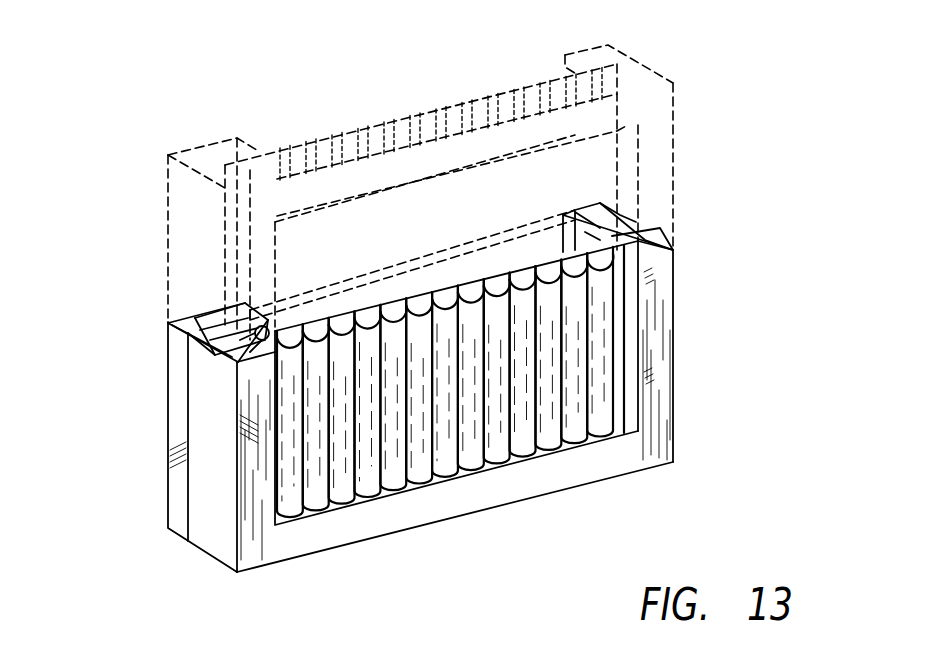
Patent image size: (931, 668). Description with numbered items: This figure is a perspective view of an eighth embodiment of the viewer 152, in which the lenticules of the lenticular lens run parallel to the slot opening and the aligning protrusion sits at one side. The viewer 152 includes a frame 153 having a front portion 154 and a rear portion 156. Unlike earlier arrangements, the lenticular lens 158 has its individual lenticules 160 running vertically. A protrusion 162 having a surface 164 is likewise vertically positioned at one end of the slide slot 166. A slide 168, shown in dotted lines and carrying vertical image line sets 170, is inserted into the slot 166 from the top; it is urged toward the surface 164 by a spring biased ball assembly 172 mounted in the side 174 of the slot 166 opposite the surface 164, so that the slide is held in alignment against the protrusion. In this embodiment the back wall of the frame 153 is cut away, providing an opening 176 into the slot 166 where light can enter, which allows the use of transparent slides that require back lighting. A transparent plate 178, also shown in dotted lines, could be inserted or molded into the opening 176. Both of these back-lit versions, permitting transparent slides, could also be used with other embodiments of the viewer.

The viewer 152 is at (686, 380).
The frame 153 is at (676, 441).
The front portion 154 is at (223, 553).
The rear portion 156 is at (180, 515).
The lenticular lens 158 is at (531, 444).
The lenticules 160 is at (316, 499).
The protrusion 162 is at (648, 240).
The surface 164 is at (634, 224).
The slide slot 166 is at (298, 307).
The slide 168 is at (420, 118).
The vertical image line sets 170 is at (517, 110).
The spring biased ball assembly 172 is at (200, 318).
The side 174 is at (240, 357).
The opening 176 is at (242, 303).
The transparent plate 178 is at (352, 270).